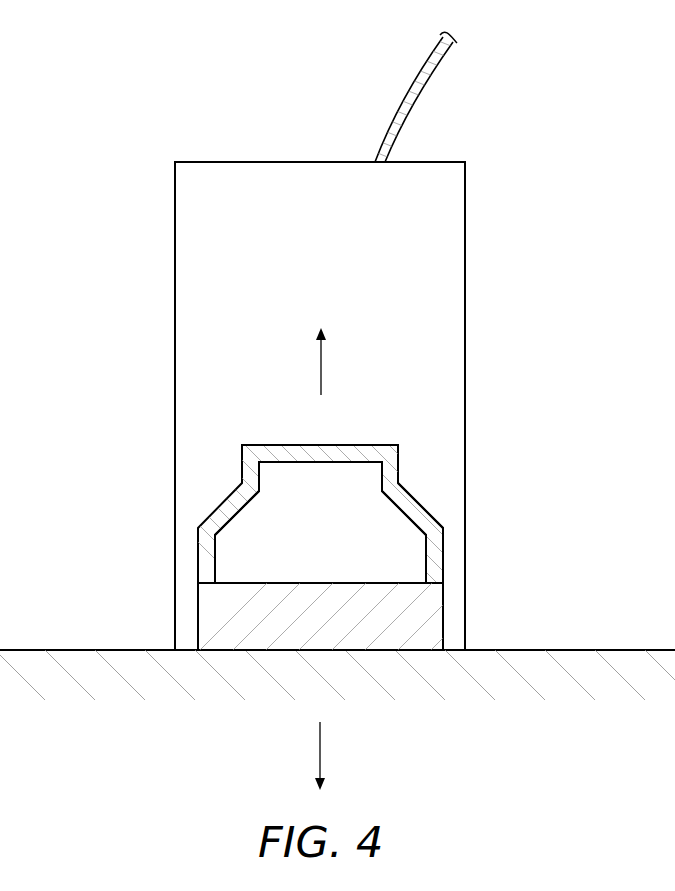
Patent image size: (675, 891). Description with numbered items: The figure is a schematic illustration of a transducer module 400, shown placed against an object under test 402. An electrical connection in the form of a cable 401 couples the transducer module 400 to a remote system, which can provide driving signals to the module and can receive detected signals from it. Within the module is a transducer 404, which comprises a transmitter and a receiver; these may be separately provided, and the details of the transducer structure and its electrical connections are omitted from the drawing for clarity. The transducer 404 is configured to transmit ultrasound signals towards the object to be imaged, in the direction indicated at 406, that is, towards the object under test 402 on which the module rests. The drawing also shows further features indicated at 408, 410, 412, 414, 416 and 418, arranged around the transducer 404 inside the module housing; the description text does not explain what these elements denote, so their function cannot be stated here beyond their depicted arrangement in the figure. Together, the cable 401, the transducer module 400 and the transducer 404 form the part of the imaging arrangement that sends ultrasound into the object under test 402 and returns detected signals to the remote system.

The transducer module 400 is at (104, 120).
The cable 401 is at (408, 103).
The object under test 402 is at (337, 691).
The transducer 404 is at (423, 610).
The direction of ultrasound transmission 406 is at (321, 752).
The shell side wall 408 is at (423, 506).
The upward direction arrow 410 is at (322, 357).
The shell / cap 412 is at (200, 497).
The shell top outer surface 414 is at (285, 445).
The shell top inner surface 416 is at (290, 462).
The cavity 418 is at (407, 553).